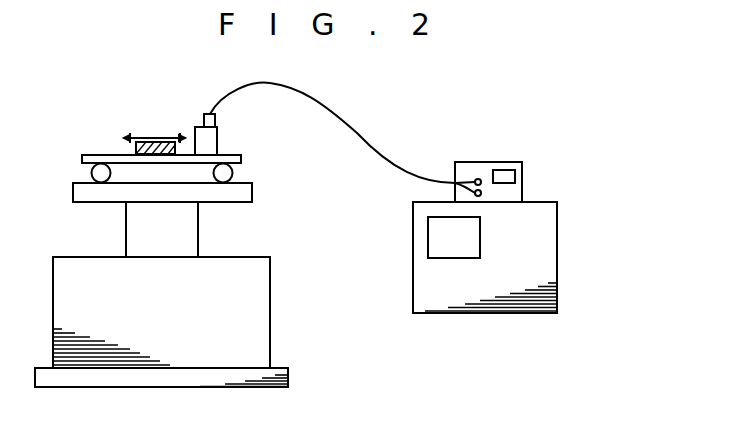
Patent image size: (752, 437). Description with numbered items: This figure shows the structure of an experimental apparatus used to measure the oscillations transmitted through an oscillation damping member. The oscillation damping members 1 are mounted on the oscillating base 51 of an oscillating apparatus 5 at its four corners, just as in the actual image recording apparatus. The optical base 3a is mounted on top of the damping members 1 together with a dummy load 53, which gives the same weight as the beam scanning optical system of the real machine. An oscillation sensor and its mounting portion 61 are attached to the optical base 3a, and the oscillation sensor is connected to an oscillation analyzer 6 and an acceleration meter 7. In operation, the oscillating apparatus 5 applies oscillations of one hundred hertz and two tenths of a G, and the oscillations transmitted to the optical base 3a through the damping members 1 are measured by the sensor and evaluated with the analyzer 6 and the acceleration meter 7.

The oscillation damping member 1 is at (98, 177).
The optical base 3a is at (108, 160).
The oscillating apparatus 5 is at (257, 315).
The oscillating base 51 is at (248, 195).
The dummy load 53 is at (145, 138).
The oscillation analyzer 6 is at (423, 270).
The oscillation sensor and its mounting portion 61 is at (195, 142).
The acceleration meter 7 is at (462, 172).